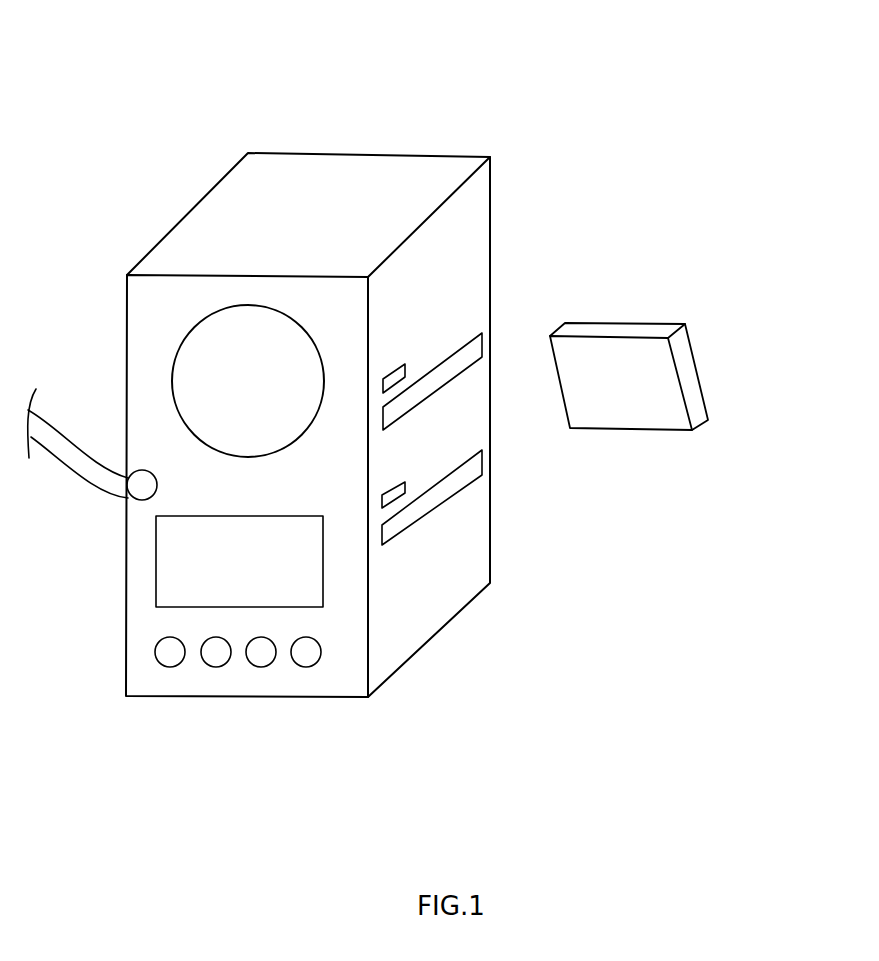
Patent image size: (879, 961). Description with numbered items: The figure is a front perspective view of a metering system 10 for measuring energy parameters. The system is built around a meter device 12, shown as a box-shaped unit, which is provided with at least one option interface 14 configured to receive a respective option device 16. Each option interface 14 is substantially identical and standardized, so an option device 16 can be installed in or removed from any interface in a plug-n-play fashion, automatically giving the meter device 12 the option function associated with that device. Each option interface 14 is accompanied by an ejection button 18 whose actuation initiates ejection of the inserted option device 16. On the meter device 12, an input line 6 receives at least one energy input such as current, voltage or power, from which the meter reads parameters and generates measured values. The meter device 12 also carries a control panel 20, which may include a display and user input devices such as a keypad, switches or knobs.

The metering system 10 is at (600, 123).
The meter device 12 is at (233, 104).
The option interface 14 is at (474, 353).
The option device 16 is at (632, 370).
The ejection button 18 is at (404, 372).
The control panel 20 is at (245, 683).
The input line 6 is at (127, 502).